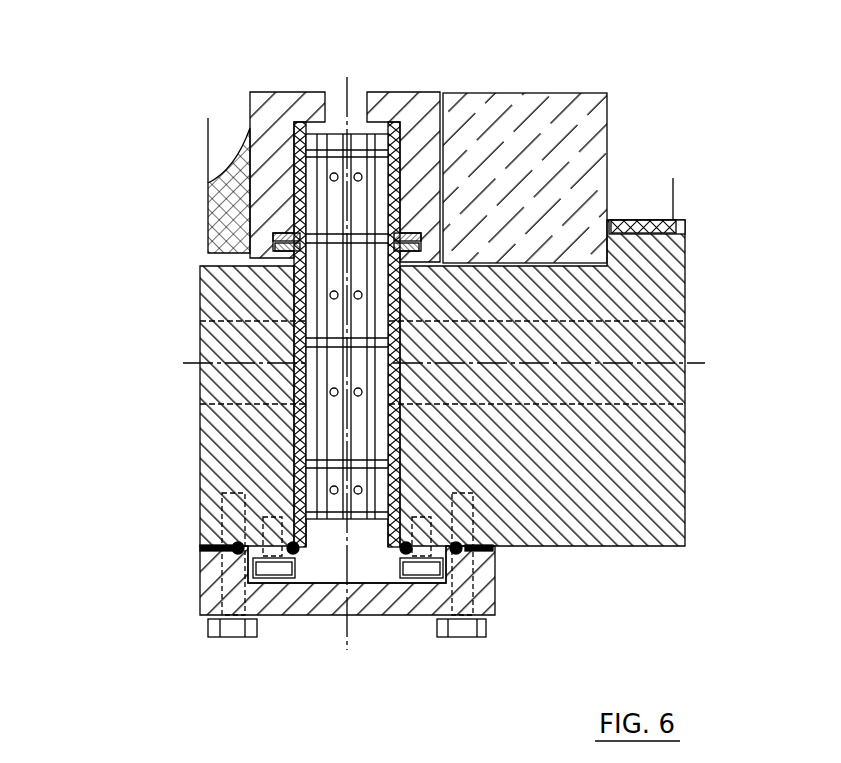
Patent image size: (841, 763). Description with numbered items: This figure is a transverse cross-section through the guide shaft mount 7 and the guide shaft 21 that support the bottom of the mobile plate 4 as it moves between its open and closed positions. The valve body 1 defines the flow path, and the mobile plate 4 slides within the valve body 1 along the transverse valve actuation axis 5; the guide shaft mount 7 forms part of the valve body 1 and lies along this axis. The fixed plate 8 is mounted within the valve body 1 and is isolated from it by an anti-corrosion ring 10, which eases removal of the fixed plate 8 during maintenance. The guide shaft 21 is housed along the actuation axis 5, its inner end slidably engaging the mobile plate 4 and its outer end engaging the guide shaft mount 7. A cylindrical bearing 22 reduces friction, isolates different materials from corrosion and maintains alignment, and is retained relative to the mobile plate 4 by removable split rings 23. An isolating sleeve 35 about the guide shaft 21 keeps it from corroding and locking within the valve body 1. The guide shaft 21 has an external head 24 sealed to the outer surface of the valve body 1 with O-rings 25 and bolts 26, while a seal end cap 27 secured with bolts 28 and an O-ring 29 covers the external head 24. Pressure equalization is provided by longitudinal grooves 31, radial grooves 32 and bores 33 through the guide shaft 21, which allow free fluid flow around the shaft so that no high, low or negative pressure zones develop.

The valve body 1 is at (688, 298).
The mobile plate 4 is at (266, 86).
The transverse valve actuation axis 5 is at (349, 80).
The guide shaft mount 7 is at (182, 395).
The fixed plate 8 is at (543, 153).
The anti-corrosion ring 10 is at (638, 214).
The guide shaft 21 is at (322, 369).
The cylindrical bearing 22 is at (399, 135).
The removable split ring 23 is at (227, 190).
The external head 24 is at (369, 570).
The O-ring 25 is at (407, 557).
The bolt 26 is at (279, 576).
The seal end cap 27 is at (502, 590).
The bolt 28 is at (467, 627).
The O-ring 29 is at (467, 537).
The longitudinal groove 31 is at (336, 280).
The radial groove 32 is at (331, 151).
The bore 33 is at (364, 389).
The isolating sleeve 35 is at (403, 331).